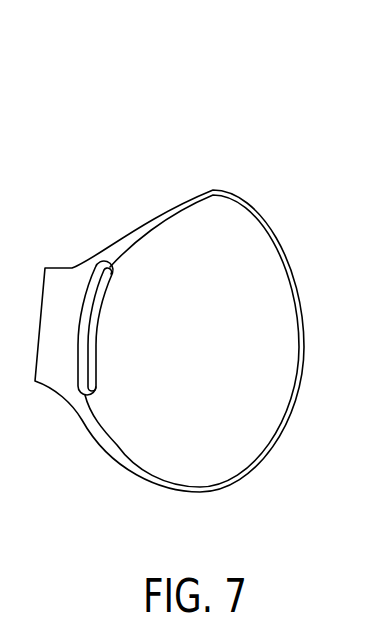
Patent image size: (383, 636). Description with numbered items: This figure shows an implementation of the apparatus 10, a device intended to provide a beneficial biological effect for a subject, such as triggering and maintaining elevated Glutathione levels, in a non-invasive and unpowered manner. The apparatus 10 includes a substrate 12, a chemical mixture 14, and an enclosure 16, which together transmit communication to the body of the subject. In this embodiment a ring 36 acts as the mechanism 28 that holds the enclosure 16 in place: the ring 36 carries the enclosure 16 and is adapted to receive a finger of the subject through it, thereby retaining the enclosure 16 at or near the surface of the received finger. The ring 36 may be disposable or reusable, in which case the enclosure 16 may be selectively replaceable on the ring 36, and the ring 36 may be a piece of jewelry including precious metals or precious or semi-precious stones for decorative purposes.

The apparatus 10 is at (301, 88).
The substrate 12 is at (88, 352).
The chemical mixture 14 is at (92, 318).
The enclosure 16 is at (113, 266).
The mechanism 28 is at (307, 208).
The ring 36 is at (240, 191).